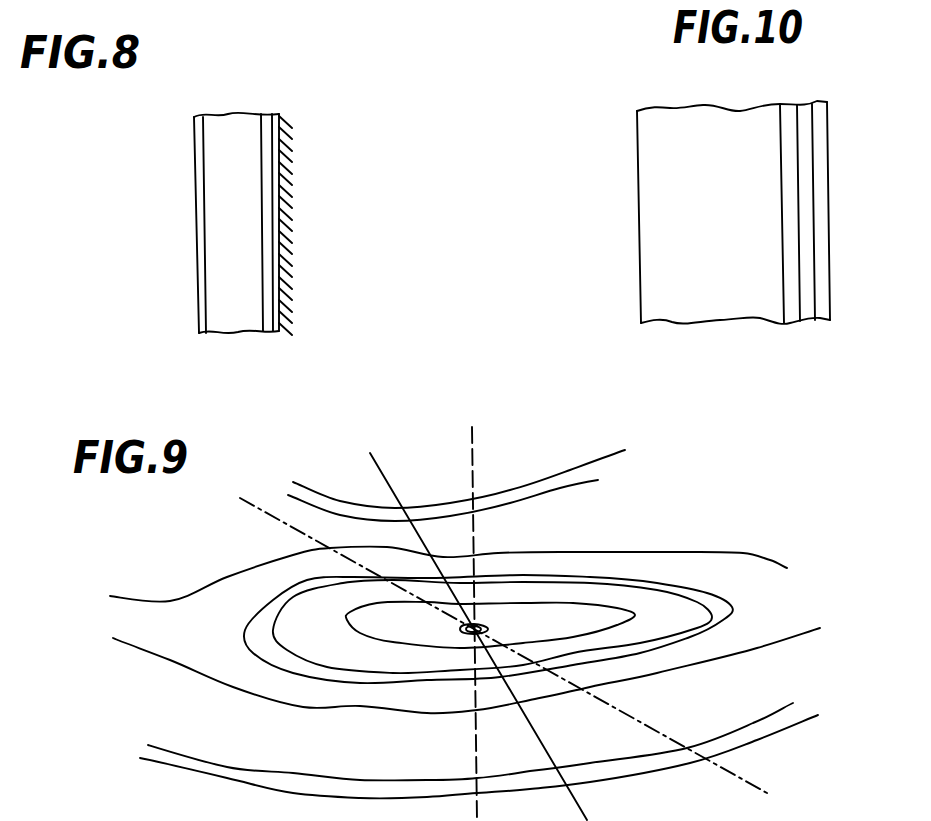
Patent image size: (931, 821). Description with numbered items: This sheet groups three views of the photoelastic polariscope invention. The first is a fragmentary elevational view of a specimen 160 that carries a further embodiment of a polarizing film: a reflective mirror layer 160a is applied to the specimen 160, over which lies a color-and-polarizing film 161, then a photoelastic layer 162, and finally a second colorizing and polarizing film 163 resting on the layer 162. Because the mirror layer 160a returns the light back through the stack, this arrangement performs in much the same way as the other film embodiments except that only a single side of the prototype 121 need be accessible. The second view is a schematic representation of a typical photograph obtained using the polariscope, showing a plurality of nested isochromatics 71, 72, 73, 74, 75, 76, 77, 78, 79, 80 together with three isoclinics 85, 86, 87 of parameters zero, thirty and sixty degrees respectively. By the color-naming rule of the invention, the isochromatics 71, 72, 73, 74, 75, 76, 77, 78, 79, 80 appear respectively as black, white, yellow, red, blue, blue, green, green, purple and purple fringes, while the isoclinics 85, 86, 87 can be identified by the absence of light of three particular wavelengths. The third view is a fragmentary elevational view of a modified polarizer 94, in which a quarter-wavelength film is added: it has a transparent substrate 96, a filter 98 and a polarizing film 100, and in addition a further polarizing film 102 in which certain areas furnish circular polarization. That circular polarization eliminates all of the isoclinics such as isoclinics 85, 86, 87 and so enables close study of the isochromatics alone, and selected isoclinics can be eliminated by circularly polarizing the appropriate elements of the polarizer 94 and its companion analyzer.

In FIG. 8, the specimen 160 is at (221, 92).
In FIG. 8, the reflective mirror layer 160a is at (279, 323).
In FIG. 8, the color-and-polarizing film 161 is at (265, 113).
In FIG. 8, the photoelastic layer 162 is at (222, 188).
In FIG. 8, the second colorizing and polarizing film 163 is at (195, 138).
In FIG. 8, the prototype 121 is at (284, 141).
In FIG. 10, the polarizer 94 is at (769, 339).
In FIG. 10, the transparent substrate 96 is at (660, 208).
In FIG. 10, the filter 98 is at (788, 112).
In FIG. 10, the polarizing film 100 is at (805, 107).
In FIG. 10, the further polarizing film 102 is at (822, 205).
In FIG. 9, the isochromatic 71 is at (490, 626).
In FIG. 9, the isochromatic 72 is at (637, 613).
In FIG. 9, the isochromatic 73 is at (714, 618).
In FIG. 9, the isochromatic 74 is at (728, 597).
In FIG. 9, the isochromatic 75 is at (752, 652).
In FIG. 9, the isochromatic 76 is at (662, 552).
In FIG. 9, the isochromatic 77 is at (752, 727).
In FIG. 9, the isochromatic 78 is at (545, 497).
In FIG. 9, the isochromatic 79 is at (800, 735).
In FIG. 9, the isochromatic 80 is at (515, 487).
In FIG. 9, the isoclinic 85 is at (470, 442).
In FIG. 9, the isoclinic 86 is at (585, 808).
In FIG. 9, the isoclinic 87 is at (758, 786).